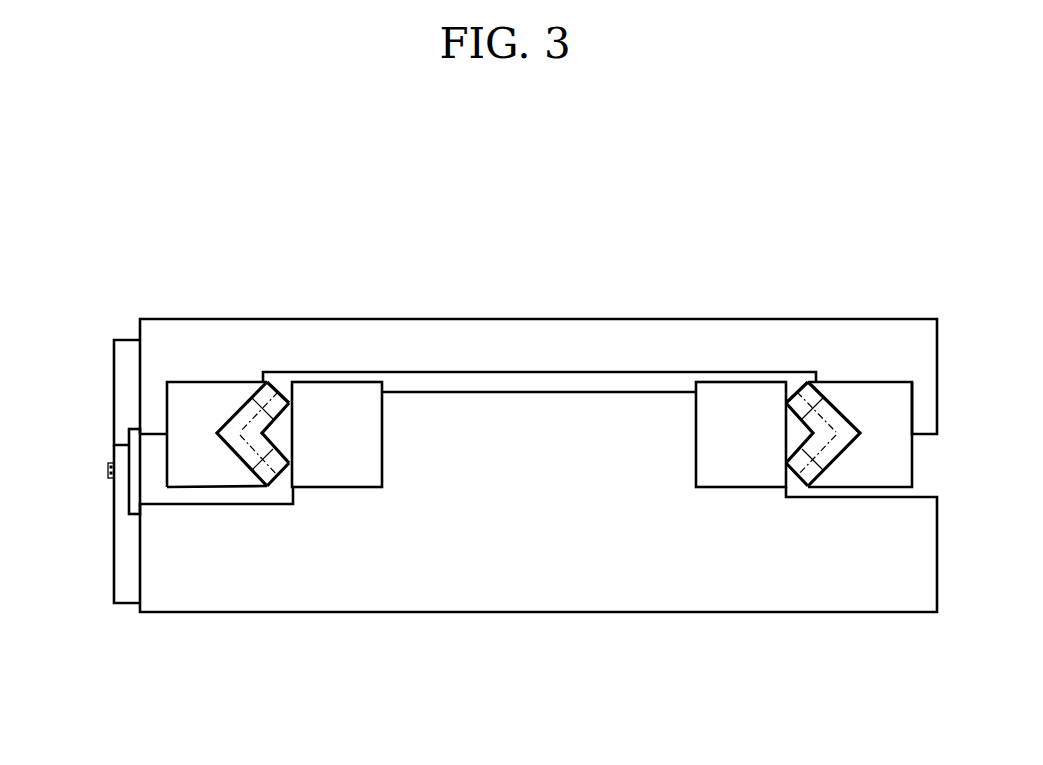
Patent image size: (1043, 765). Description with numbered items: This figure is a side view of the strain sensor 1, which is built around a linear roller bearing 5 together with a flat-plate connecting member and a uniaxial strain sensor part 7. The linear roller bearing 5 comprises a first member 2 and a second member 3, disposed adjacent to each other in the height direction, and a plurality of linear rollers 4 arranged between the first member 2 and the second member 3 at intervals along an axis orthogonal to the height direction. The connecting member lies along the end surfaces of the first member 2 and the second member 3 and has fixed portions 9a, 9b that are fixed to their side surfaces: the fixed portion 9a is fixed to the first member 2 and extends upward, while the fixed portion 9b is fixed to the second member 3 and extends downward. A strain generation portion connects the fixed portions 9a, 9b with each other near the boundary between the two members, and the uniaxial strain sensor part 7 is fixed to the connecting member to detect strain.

The strain sensor 1 is at (519, 242).
The first member 2 is at (937, 548).
The second member 3 is at (937, 370).
The linear rollers 4 is at (255, 397).
The linear roller bearing 5 is at (334, 505).
The uniaxial strain sensor part 7 is at (108, 464).
The fixed portion 9a is at (125, 603).
The fixed portion 9b is at (123, 340).